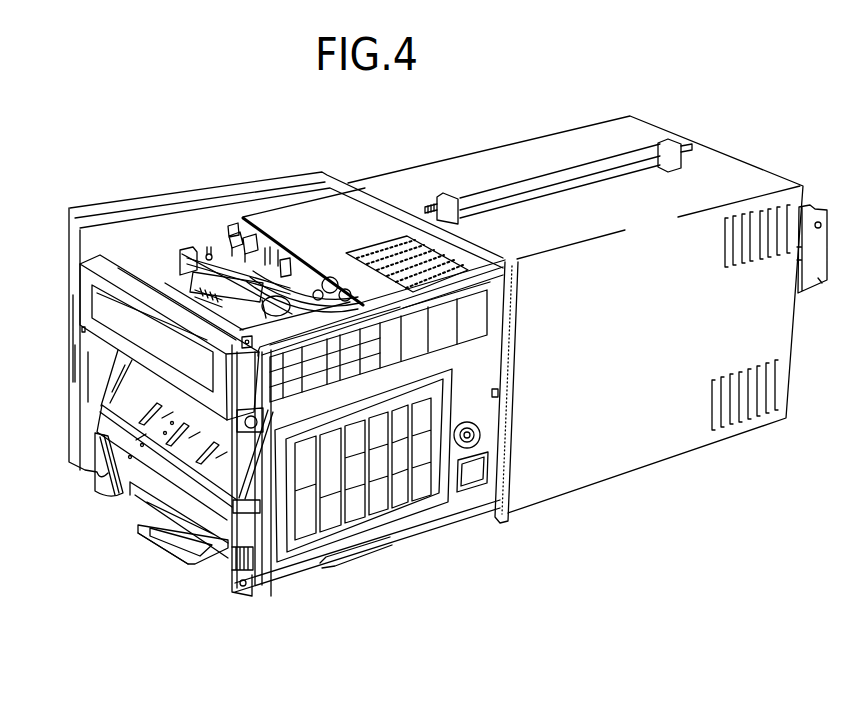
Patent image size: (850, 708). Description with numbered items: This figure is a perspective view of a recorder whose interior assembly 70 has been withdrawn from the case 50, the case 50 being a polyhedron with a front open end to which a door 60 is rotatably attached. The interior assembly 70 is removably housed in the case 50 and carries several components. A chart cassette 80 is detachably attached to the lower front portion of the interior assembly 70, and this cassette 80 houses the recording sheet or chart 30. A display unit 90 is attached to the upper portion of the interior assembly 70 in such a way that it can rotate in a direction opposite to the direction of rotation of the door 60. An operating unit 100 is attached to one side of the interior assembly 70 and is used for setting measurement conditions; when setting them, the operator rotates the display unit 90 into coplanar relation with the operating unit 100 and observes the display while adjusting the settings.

The chart 30 is at (150, 483).
The case 50 is at (625, 462).
The door 60 is at (207, 193).
The interior assembly 70 is at (208, 573).
The chart cassette 80 is at (95, 482).
The display unit 90 is at (88, 275).
The operating unit 100 is at (382, 507).